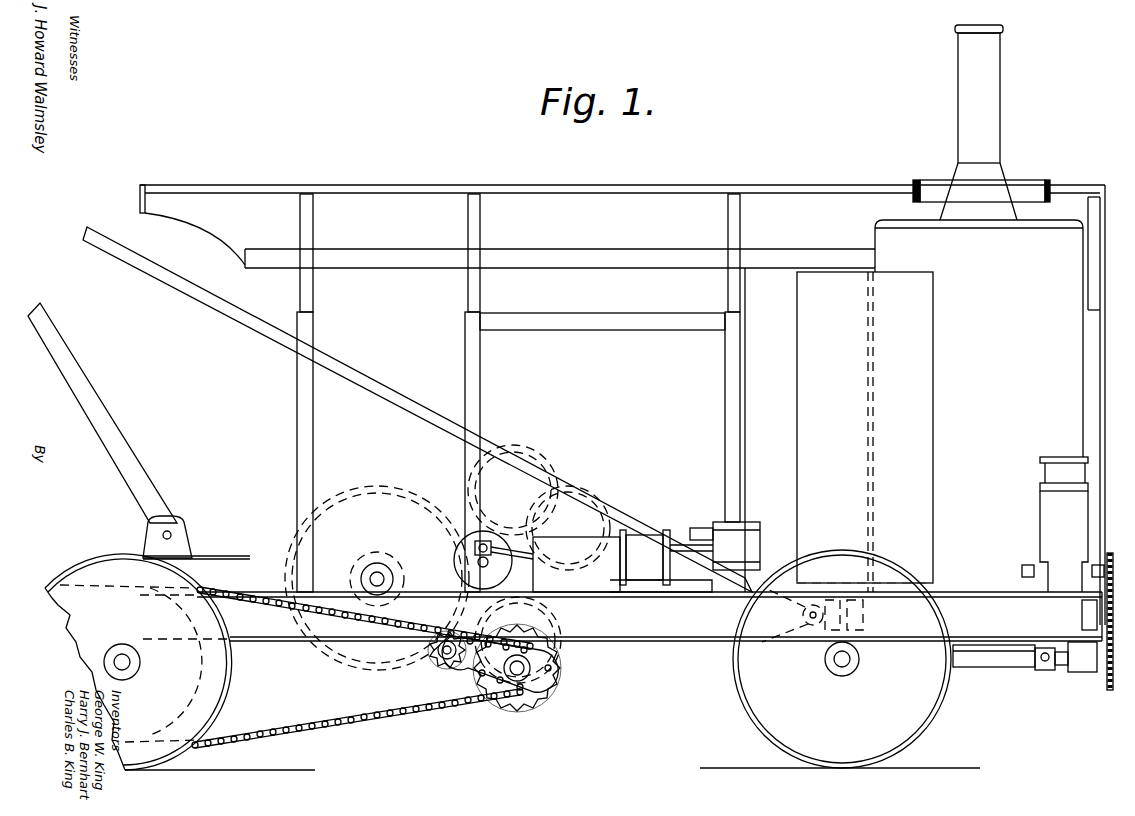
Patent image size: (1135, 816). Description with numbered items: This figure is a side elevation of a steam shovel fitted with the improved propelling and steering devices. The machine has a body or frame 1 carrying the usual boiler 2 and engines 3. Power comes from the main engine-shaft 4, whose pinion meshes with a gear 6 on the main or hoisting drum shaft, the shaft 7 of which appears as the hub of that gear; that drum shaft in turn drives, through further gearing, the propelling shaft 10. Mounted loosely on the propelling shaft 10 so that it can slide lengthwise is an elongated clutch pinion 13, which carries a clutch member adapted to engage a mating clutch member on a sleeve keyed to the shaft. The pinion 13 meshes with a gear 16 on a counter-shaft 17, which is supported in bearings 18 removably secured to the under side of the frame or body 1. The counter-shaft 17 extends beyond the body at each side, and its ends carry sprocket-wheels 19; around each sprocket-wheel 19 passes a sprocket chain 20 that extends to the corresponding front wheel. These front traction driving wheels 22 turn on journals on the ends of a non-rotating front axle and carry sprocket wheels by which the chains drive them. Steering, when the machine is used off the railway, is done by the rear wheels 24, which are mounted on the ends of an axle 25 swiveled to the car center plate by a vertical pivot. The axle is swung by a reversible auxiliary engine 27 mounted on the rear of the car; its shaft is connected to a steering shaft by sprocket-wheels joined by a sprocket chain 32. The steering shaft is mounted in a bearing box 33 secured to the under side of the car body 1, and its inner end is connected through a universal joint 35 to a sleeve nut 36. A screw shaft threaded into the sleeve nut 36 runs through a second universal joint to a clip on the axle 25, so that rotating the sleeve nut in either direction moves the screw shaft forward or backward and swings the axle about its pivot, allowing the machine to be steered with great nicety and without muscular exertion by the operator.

The body or frame 1 is at (688, 623).
The boiler 2 is at (1065, 268).
The engines 3 is at (645, 552).
The main engine-shaft 4 is at (488, 564).
The gear 6 is at (366, 493).
The pulley shaft 7 is at (379, 574).
The propelling shaft 10 is at (432, 657).
The elongated pinion 13 is at (449, 665).
The gear 16 is at (540, 704).
The counter-shaft 17 is at (512, 676).
The bearings 18 is at (556, 646).
The sprocket-wheels 19 is at (537, 690).
The sprocket chain 20 is at (368, 718).
The traction driving wheels 22 is at (106, 566).
The rear wheels 24 is at (912, 717).
The axle 25 is at (859, 660).
The auxiliary engine 27 is at (1047, 510).
The sprocket chain 32 is at (1103, 580).
The bearing box 33 is at (1087, 670).
The universal joint 35 is at (1046, 670).
The sleeve nut 36 is at (1005, 663).